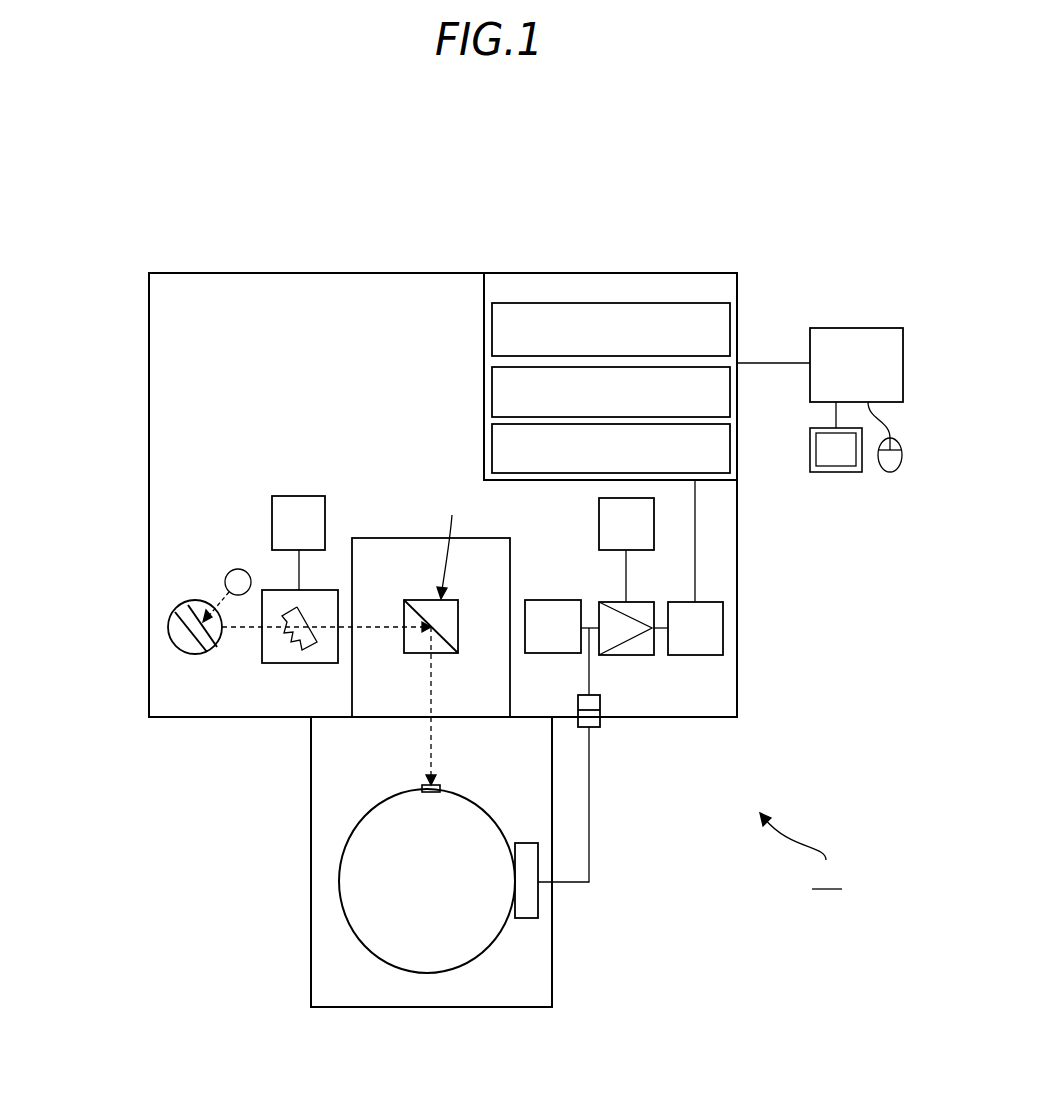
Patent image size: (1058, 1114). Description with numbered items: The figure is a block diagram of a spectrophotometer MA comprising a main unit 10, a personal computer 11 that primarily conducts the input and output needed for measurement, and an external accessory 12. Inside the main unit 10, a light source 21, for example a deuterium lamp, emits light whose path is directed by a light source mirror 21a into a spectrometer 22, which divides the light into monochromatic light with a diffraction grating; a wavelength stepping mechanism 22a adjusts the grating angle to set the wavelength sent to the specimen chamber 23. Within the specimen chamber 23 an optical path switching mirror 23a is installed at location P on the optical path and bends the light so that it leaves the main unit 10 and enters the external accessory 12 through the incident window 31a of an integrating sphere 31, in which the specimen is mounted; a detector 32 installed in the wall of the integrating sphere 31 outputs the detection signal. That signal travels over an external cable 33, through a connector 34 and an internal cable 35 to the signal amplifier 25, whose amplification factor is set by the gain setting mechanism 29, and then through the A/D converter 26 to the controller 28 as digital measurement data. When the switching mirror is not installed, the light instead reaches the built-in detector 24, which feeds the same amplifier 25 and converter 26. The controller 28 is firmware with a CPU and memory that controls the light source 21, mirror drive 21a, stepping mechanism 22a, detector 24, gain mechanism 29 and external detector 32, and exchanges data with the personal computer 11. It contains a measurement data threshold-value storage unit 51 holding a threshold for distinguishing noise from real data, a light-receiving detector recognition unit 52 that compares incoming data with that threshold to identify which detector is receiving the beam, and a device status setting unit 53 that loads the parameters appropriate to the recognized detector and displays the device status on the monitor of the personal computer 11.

The main unit 10 is at (458, 290).
The controller 28 is at (705, 273).
The measurement data threshold-value storage unit 51 is at (728, 312).
The light-receiving detector recognition unit 52 is at (735, 360).
The device status setting unit 53 is at (740, 460).
The personal computer 11 is at (852, 328).
The wavelength stepping mechanism 22a is at (287, 494).
The spectrometer 22 is at (262, 652).
The light source 21 is at (226, 578).
The light source mirror 21a is at (172, 622).
The specimen chamber 23 is at (352, 688).
The optical path switching mirror 23a is at (414, 598).
The location on the optical path P is at (449, 542).
The detector 24 is at (537, 600).
The signal amplifier 25 is at (612, 602).
The A/D converter 26 is at (723, 628).
The gain setting mechanism 29 is at (654, 521).
The internal cable 35 is at (589, 680).
The connector 34 is at (600, 725).
The external cable 33 is at (589, 820).
The detector 32 is at (538, 900).
The external accessory 12 is at (311, 875).
The integrating sphere 31 is at (348, 930).
The incident window 31a is at (440, 785).
The spectrophotometer MA is at (802, 851).